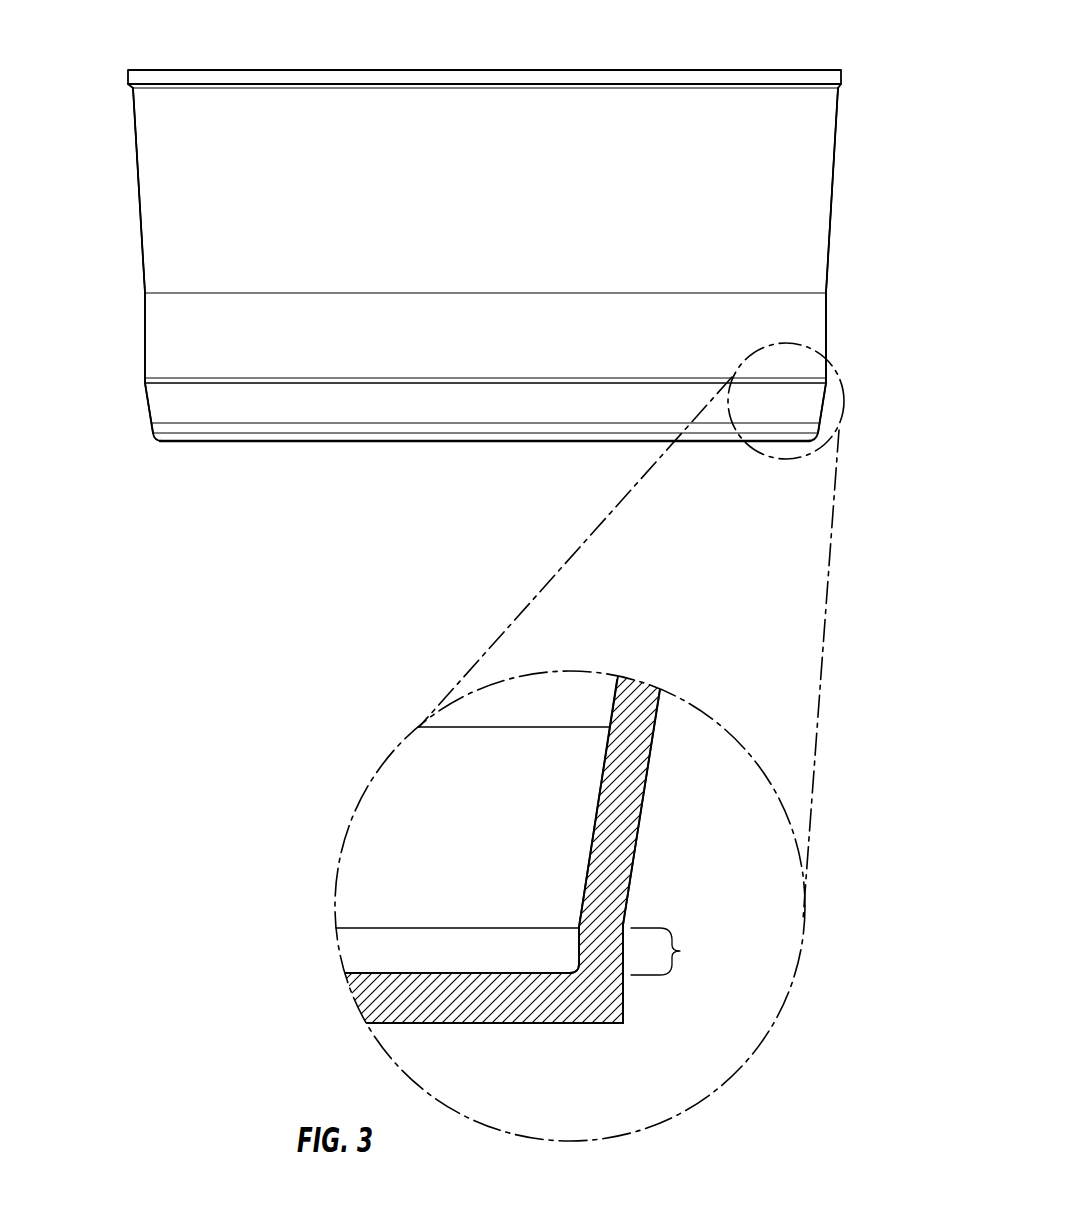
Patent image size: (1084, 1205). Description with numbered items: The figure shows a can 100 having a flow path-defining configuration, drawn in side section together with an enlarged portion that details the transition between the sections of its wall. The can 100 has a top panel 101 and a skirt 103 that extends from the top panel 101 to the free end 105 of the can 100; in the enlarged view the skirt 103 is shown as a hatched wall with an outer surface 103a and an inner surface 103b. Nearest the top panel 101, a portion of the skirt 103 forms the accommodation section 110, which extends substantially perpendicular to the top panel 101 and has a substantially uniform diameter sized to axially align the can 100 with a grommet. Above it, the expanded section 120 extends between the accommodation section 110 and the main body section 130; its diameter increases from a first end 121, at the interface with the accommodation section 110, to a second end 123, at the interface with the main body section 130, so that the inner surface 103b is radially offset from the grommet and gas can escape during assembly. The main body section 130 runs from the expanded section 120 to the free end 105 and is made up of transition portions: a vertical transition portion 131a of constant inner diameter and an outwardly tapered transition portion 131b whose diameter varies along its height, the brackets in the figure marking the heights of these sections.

The can 100 is at (897, 100).
The top panel 101 is at (373, 443).
The skirt 103 is at (314, 345).
The outer surface of the skirt 103a is at (660, 717).
The inner surface of the skirt 103b is at (596, 830).
The free end 105 is at (688, 74).
The accommodation section 110 is at (122, 425).
The expanded section 120 is at (122, 380).
The first end of the expanded section 121 is at (577, 927).
The second end of the expanded section 123 is at (611, 728).
The main body section 130 is at (845, 72).
The vertical transition portion 131a is at (122, 295).
The outwardly tapered transition portion 131b is at (122, 75).